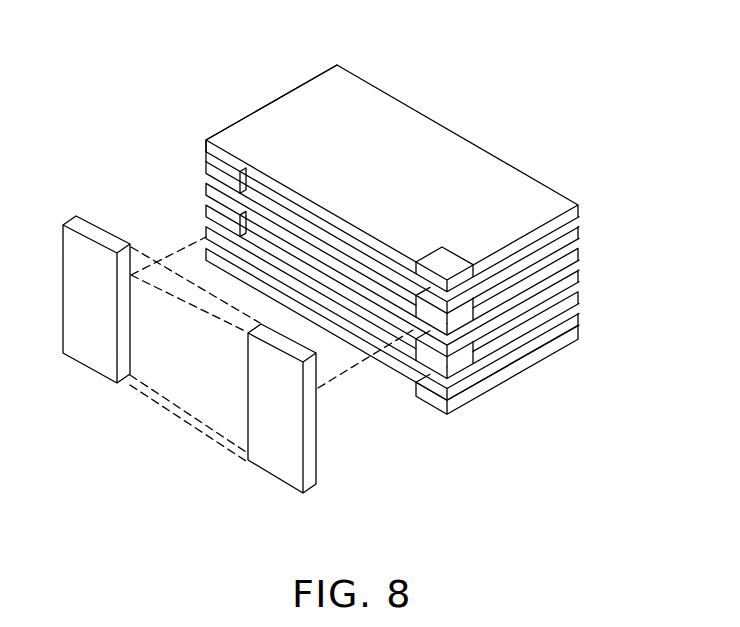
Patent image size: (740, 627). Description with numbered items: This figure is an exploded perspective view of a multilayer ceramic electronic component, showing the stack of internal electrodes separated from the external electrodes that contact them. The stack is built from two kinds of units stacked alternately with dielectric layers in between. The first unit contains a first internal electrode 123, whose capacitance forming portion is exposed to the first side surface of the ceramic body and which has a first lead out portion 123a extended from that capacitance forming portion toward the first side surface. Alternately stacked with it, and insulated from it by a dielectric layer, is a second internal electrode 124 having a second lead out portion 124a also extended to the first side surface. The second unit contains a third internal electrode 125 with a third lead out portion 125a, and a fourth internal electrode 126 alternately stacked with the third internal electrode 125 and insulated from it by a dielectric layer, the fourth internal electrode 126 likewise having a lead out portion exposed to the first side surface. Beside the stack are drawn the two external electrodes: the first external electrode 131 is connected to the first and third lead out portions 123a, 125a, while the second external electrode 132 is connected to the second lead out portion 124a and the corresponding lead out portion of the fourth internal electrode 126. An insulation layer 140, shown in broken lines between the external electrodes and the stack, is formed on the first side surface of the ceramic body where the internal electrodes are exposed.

The first internal electrode 123 is at (400, 132).
The first lead out portion 123a is at (233, 140).
The second internal electrode 124 is at (582, 220).
The second lead out portion 124a is at (448, 277).
The third internal electrode 125 is at (582, 237).
The third lead out portion 125a is at (433, 310).
The fourth internal electrode 126 is at (582, 249).
The first external electrode 131 is at (92, 330).
The second external electrode 132 is at (282, 440).
The insulation layer 140 is at (172, 417).